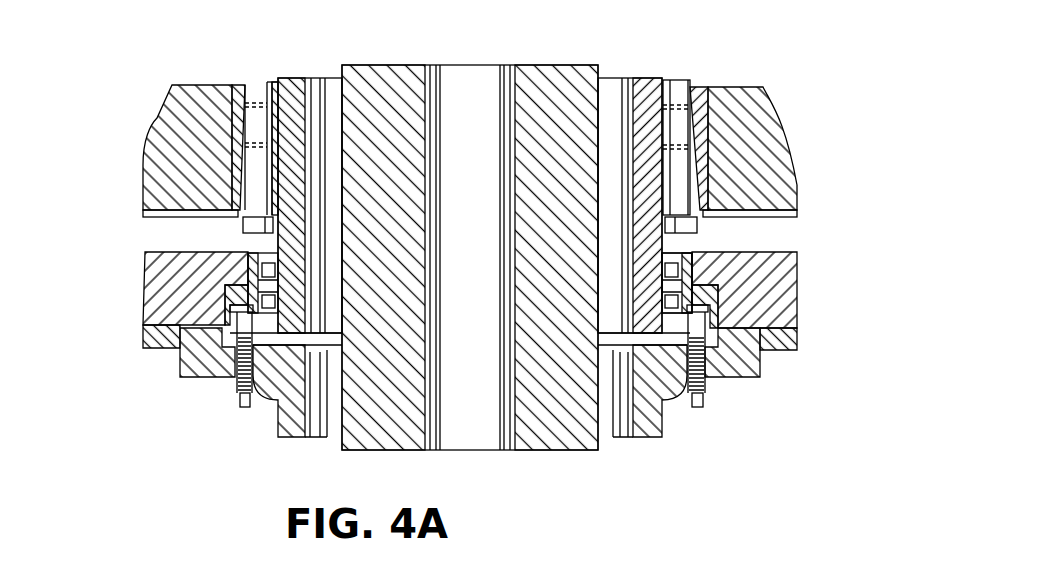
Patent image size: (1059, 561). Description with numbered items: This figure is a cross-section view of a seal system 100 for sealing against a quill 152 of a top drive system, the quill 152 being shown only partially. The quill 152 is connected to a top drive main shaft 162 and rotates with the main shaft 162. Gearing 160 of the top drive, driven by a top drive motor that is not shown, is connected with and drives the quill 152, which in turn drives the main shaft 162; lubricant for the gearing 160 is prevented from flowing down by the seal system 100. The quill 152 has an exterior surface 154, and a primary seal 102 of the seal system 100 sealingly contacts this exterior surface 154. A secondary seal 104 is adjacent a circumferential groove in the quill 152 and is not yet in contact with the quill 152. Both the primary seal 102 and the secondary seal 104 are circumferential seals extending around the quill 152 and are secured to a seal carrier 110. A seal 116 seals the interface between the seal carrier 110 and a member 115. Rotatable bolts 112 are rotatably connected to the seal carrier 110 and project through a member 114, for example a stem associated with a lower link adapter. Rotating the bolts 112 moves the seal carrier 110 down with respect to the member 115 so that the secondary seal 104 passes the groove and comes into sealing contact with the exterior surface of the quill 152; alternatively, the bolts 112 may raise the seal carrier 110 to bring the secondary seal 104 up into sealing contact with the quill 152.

The seal system 100 is at (722, 291).
The primary seal 102 is at (690, 300).
The secondary seal 104 is at (740, 252).
The seal carrier 110 is at (250, 309).
The rotatable bolts 112 is at (243, 405).
The member 114 is at (662, 425).
The member 115 is at (142, 315).
The seal 116 is at (262, 262).
The quill 152 is at (657, 85).
The exterior surface 154 is at (278, 243).
The gearing 160 is at (165, 168).
The top drive main shaft 162 is at (380, 72).